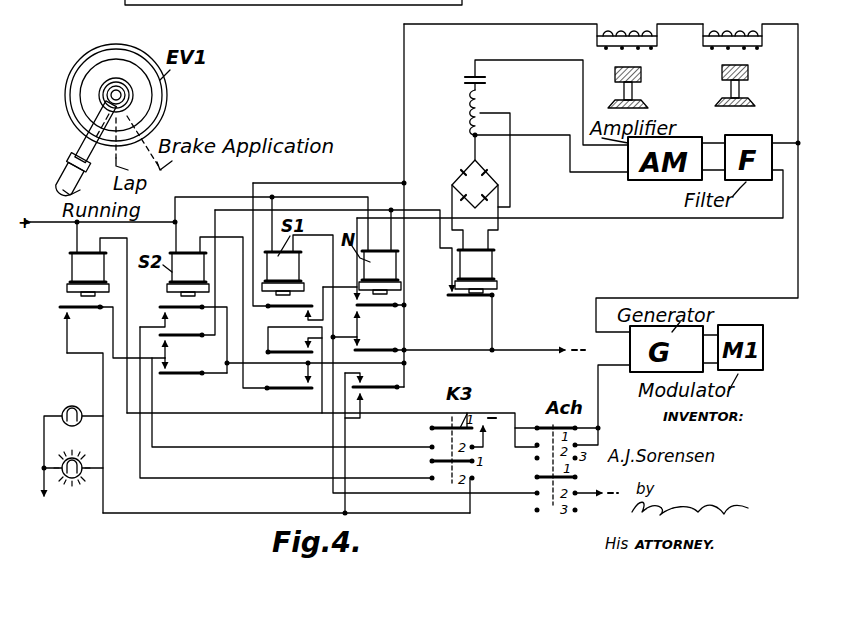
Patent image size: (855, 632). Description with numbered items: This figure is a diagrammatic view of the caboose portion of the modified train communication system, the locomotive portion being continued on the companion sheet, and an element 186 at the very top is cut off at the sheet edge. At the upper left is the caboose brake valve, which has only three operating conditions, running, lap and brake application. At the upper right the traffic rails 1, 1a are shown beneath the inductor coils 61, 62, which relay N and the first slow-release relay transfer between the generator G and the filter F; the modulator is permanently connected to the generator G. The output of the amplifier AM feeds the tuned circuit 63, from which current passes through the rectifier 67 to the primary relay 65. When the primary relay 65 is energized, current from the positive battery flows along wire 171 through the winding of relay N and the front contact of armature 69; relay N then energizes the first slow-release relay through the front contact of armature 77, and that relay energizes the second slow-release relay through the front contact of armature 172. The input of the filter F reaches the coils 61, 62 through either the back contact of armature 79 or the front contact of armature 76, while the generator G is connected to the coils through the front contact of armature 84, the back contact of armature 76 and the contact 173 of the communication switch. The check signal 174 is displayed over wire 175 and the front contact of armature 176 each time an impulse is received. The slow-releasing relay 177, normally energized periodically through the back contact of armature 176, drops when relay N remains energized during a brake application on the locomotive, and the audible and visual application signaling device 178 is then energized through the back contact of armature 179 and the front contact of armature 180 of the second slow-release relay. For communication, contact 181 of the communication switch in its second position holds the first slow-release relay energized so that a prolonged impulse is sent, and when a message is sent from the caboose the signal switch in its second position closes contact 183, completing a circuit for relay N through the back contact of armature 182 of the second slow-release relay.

The brake valve housing 186 is at (393, 5).
The wire 171 is at (229, 196).
The slow-releasing relay 177 is at (72, 268).
The armature of relay 177 179 is at (78, 310).
The application signaling device 178 is at (80, 398).
The check signal 174 is at (76, 483).
The wire 175 is at (165, 515).
The armature of relay S2 182 is at (286, 344).
The armature of relay S2 180 is at (292, 402).
The armature of relay S1 79 is at (305, 297).
The armature of relay S1 84 is at (294, 370).
The armature of relay S1 172 is at (268, 392).
The armature of relay N 76 is at (390, 310).
The armature of relay N 77 is at (470, 342).
The armature of relay N 176 is at (392, 390).
The armature of relay 65 69 is at (487, 302).
The primary relay 65 is at (492, 266).
The tuned circuit 63 is at (489, 108).
The rectifier 67 is at (462, 178).
The inductor coil 61 is at (648, 30).
The inductor coil 62 is at (750, 30).
The rail 1 is at (636, 95).
The rail 1a is at (735, 92).
The contact of communication switch Ack 173 is at (536, 424).
The contact of signal switch K3 183 is at (430, 429).
The contact of switch Ack 181 is at (536, 478).